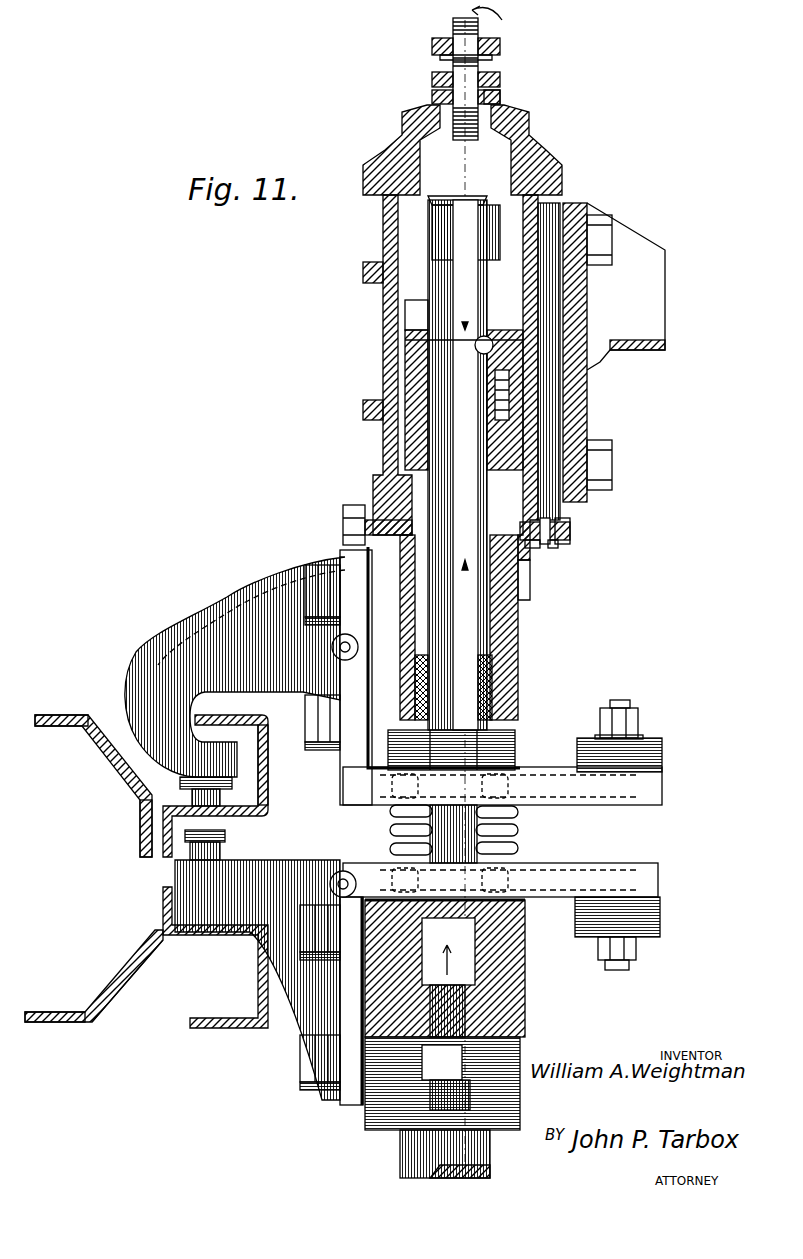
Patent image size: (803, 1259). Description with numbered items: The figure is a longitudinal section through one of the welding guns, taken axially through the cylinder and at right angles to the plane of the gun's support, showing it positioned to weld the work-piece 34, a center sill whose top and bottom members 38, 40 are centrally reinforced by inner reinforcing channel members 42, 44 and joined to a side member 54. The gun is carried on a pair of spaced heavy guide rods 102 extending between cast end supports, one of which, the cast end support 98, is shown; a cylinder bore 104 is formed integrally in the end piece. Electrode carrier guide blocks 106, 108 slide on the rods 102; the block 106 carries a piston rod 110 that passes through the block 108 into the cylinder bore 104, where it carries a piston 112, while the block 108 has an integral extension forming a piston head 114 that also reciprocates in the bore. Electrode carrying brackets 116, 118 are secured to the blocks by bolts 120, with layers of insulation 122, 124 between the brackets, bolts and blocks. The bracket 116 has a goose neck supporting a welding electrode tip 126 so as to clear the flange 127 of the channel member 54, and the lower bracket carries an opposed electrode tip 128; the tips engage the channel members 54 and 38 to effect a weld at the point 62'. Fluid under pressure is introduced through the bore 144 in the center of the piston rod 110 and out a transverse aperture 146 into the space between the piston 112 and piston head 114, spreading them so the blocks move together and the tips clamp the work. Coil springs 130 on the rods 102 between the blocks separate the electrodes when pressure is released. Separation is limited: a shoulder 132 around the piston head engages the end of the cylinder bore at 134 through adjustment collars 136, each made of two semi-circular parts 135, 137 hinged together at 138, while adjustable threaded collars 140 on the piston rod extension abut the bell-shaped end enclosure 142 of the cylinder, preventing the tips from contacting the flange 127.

The work-piece 34 is at (128, 985).
The top member 38 is at (62, 716).
The bottom member 40 is at (46, 1024).
The inner reinforcing channel member 42 is at (68, 727).
The inner reinforcing channel member 44 is at (45, 1012).
The side member 54 is at (266, 750).
The weld point 62' is at (122, 828).
The cast end support 98 is at (565, 200).
The guide rods 102 is at (500, 815).
The cylinder bore 104 is at (530, 195).
The electrode carrier guide block 106 is at (500, 1000).
The electrode carrier guide block 108 is at (515, 675).
The piston rod 110 is at (450, 383).
The piston 112 is at (548, 282).
The piston head 114 is at (510, 408).
The electrode carrying bracket 116 is at (205, 635).
The electrode carrying bracket 118 is at (232, 935).
The bolts 120 is at (322, 582).
The layer of insulation 122 is at (352, 762).
The layer of insulation 124 is at (360, 985).
The welding electrode tip 126 is at (192, 795).
The flange 127 is at (232, 725).
The electrode tip 128 is at (185, 836).
The coil springs 130 is at (518, 835).
The shoulder 132 is at (530, 560).
The end of cylinder bore 134 is at (540, 512).
The semi-circular part 135 is at (540, 548).
The adjustment collar 136 is at (570, 532).
The semi-circular part 137 is at (552, 522).
The hinge 138 is at (560, 544).
The adjustable threaded collars 140 is at (432, 78).
The bell-shaped end enclosure 142 is at (402, 138).
The bore 144 is at (500, 80).
The transverse aperture 146 is at (474, 345).